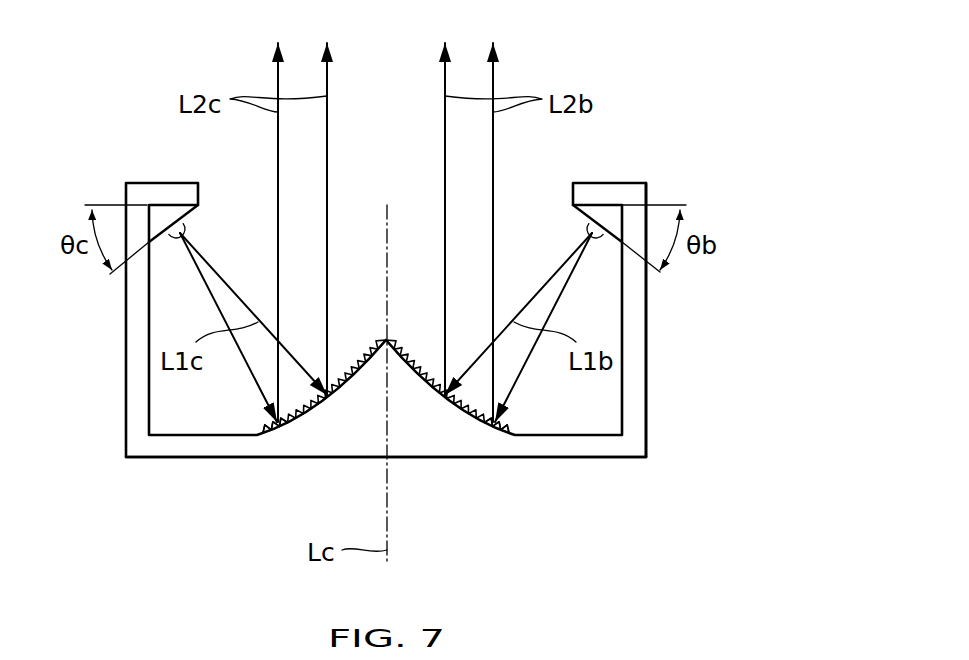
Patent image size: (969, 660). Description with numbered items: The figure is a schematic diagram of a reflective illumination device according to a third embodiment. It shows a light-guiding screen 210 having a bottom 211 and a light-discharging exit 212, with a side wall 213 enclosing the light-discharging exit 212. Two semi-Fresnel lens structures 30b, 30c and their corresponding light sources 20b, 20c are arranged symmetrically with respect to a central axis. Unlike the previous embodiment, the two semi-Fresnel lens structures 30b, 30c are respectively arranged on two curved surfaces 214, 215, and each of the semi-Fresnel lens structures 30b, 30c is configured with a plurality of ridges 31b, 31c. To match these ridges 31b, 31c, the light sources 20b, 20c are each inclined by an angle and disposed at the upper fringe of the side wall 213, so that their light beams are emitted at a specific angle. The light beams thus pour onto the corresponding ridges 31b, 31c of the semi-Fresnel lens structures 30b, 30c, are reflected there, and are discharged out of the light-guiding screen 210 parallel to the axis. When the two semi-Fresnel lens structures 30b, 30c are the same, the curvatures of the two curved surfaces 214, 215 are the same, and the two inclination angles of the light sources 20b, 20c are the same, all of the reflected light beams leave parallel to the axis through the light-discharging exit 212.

The light-guiding screen 210 is at (662, 420).
The bottom 211 is at (577, 452).
The light-discharging exit 212 is at (387, 205).
The side wall 213 is at (646, 327).
The curved surface 214 is at (437, 410).
The curved surface 215 is at (337, 410).
The light source 20c is at (187, 228).
The light source 20b is at (585, 228).
The semi-Fresnel lens structure 30c is at (361, 355).
The semi-Fresnel lens structure 30b is at (411, 355).
The ridges 31c is at (262, 430).
The ridges 31b is at (510, 430).